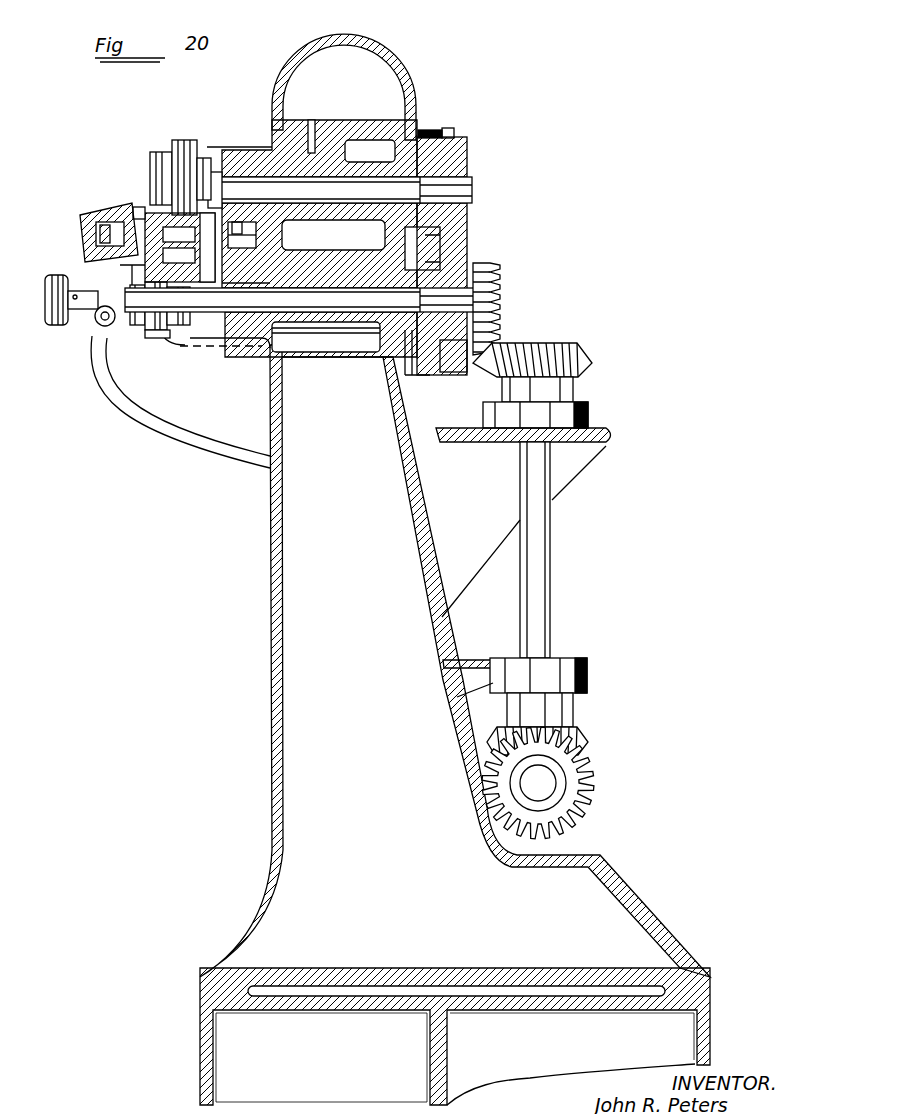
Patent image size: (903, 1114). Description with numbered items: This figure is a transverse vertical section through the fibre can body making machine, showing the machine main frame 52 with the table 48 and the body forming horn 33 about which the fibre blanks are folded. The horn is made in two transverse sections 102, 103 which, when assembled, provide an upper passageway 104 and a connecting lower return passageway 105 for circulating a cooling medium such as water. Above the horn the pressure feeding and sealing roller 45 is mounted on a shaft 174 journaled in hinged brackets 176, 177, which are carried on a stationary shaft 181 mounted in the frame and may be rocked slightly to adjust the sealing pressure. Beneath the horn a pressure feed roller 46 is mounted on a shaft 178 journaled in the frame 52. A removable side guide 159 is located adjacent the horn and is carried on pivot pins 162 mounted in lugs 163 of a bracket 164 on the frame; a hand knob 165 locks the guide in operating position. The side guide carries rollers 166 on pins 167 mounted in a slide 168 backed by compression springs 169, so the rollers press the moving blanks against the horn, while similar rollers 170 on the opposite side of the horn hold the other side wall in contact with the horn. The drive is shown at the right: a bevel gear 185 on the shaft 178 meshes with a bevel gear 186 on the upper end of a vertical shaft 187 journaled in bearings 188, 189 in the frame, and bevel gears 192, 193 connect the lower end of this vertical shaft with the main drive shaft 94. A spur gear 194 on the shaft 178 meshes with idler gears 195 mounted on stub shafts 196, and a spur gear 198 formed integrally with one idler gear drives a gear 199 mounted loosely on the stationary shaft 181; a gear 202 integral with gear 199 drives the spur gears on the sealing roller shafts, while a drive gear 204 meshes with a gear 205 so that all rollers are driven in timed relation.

The body forming horn 33 is at (152, 213).
The pressure feeding and sealing roller 45 is at (186, 140).
The pressure feed roller 46 is at (168, 345).
The table 48 is at (223, 287).
The machine main frame 52 is at (275, 612).
The main drive shaft 94 is at (538, 783).
The horn transverse section 102 is at (90, 291).
The horn transverse section 103 is at (258, 250).
The upper passageway 104 is at (134, 292).
The lower return passageway 105 is at (301, 251).
The side guide 159 is at (85, 250).
The pivot pins 162 is at (103, 318).
The lugs 163 is at (103, 325).
The bracket 164 is at (105, 382).
The hand knob 165 is at (50, 302).
The rollers 166 is at (125, 207).
The pins 167 is at (150, 222).
The slide 168 is at (82, 197).
The compression springs 169 is at (98, 233).
The rollers 170 is at (204, 158).
The shaft 174 is at (160, 152).
The hinged bracket 176 is at (378, 238).
The hinged bracket 177 is at (383, 167).
The shaft 178 is at (316, 330).
The stationary shaft 181 is at (367, 151).
The bevel gear 185 is at (500, 280).
The bevel gear 186 is at (577, 357).
The vertical shaft 187 is at (548, 550).
The bearing 188 is at (590, 418).
The bearing 189 is at (590, 678).
The bevel gear 192 is at (586, 738).
The bevel gear 193 is at (593, 778).
The spur gear 194 is at (420, 345).
The idler gears 195 is at (424, 248).
The stub shafts 196 is at (301, 297).
The spur gear 198 is at (466, 262).
The gear 199 is at (468, 158).
The gear 202 is at (418, 150).
The drive gear 204 is at (448, 362).
The gear 205 is at (446, 128).